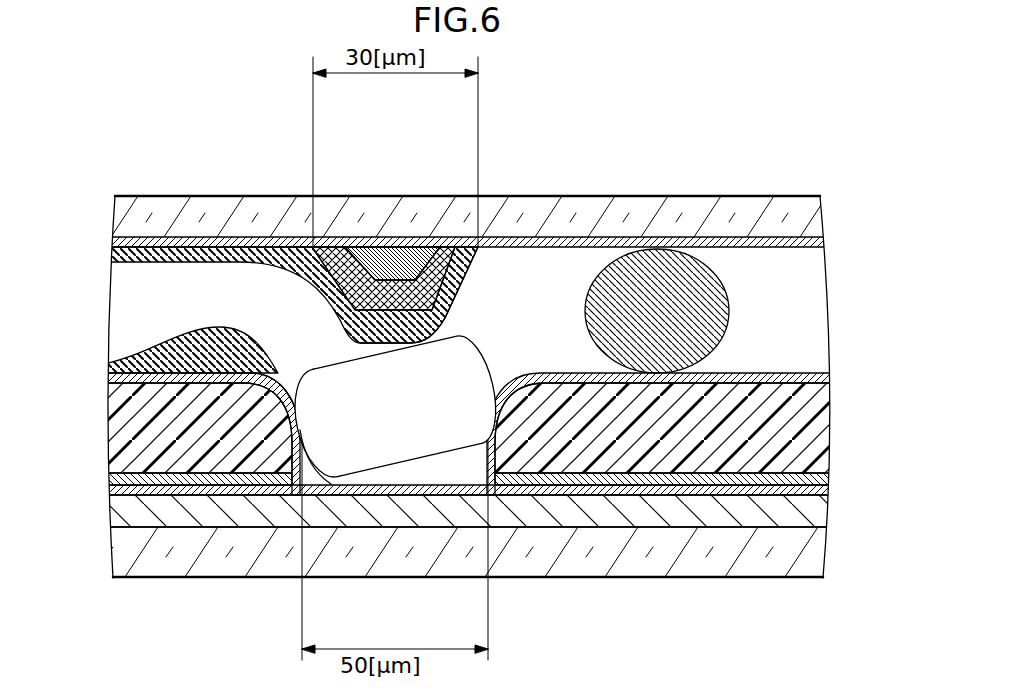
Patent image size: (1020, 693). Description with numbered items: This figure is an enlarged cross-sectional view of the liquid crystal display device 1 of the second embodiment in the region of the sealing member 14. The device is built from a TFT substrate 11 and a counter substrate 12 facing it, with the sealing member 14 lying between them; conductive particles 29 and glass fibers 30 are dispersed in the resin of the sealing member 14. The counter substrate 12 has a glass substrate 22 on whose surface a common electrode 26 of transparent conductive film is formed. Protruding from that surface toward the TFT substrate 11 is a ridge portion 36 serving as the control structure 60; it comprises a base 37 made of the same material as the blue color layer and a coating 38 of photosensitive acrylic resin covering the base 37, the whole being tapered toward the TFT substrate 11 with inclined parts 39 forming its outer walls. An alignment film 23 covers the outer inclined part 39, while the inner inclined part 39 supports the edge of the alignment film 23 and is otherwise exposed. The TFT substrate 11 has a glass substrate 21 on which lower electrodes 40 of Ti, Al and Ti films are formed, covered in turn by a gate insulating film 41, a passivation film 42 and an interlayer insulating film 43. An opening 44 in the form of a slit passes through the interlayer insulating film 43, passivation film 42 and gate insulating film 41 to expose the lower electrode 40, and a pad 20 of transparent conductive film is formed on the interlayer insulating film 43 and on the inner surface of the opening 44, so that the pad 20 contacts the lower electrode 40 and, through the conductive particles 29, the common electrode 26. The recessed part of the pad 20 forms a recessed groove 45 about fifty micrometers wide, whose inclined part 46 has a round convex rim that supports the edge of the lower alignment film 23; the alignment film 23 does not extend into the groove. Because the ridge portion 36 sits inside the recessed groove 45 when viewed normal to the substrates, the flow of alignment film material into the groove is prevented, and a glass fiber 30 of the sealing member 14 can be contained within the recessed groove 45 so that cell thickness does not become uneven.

The liquid crystal display device 1 is at (572, 82).
The TFT substrate 11 is at (215, 577).
The counter substrate 12 is at (216, 197).
The sealing member 14 is at (122, 314).
The pad 20 is at (822, 378).
The glass substrate 21 is at (822, 557).
The glass substrate 22 is at (818, 210).
The alignment film 23 is at (110, 256).
The common electrode 26 is at (816, 243).
The conductive particle 29 is at (657, 277).
The glass fiber 30 is at (457, 350).
The ridge portion 36 is at (431, 224).
The base 37 is at (453, 150).
The coating 38 is at (456, 245).
The inclined part 39 is at (466, 278).
The lower electrode 40 is at (822, 510).
The gate insulating film 41 is at (826, 490).
The passivation film 42 is at (826, 480).
The interlayer insulating film 43 is at (820, 420).
The opening 44 is at (331, 484).
The recessed groove 45 is at (501, 400).
The inclined part 46 is at (278, 372).
The control structure 60 is at (576, 300).